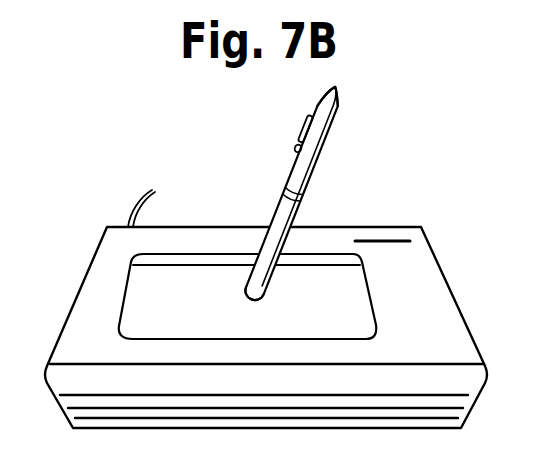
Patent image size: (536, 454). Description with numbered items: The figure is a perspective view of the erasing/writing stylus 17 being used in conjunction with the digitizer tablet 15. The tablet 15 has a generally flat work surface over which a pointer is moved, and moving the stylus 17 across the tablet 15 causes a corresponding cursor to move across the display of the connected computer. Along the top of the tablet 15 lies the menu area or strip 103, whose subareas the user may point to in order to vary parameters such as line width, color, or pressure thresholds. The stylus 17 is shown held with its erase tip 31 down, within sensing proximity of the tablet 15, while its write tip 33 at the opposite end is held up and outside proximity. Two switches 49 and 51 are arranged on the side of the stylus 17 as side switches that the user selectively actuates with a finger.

The digitizer tablet 15 is at (356, 319).
The stylus 17 is at (350, 157).
The erase tip 31 is at (258, 295).
The write tip 33 is at (331, 98).
The switch 49 is at (311, 121).
The switch 51 is at (298, 151).
The menu area or strip 103 is at (231, 254).